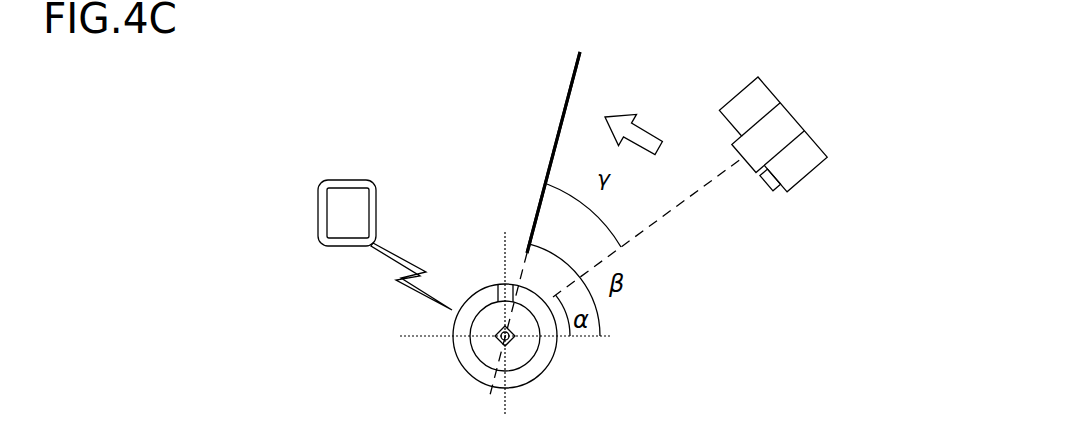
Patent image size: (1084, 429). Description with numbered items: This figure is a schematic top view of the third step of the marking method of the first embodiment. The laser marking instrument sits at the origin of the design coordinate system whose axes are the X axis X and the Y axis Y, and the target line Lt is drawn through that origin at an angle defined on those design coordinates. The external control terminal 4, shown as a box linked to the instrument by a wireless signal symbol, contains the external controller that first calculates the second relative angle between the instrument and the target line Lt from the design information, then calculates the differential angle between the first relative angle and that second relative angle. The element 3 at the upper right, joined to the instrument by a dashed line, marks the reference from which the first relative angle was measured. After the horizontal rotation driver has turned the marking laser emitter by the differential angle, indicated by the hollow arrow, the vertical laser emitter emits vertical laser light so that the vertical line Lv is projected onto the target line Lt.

The camera 3 is at (730, 100).
The external control terminal 4 is at (318, 213).
The target line Lt is at (577, 210).
The vertical line Lv is at (568, 95).
The X coordinate axis X is at (515, 336).
The Y coordinate axis Y is at (504, 306).